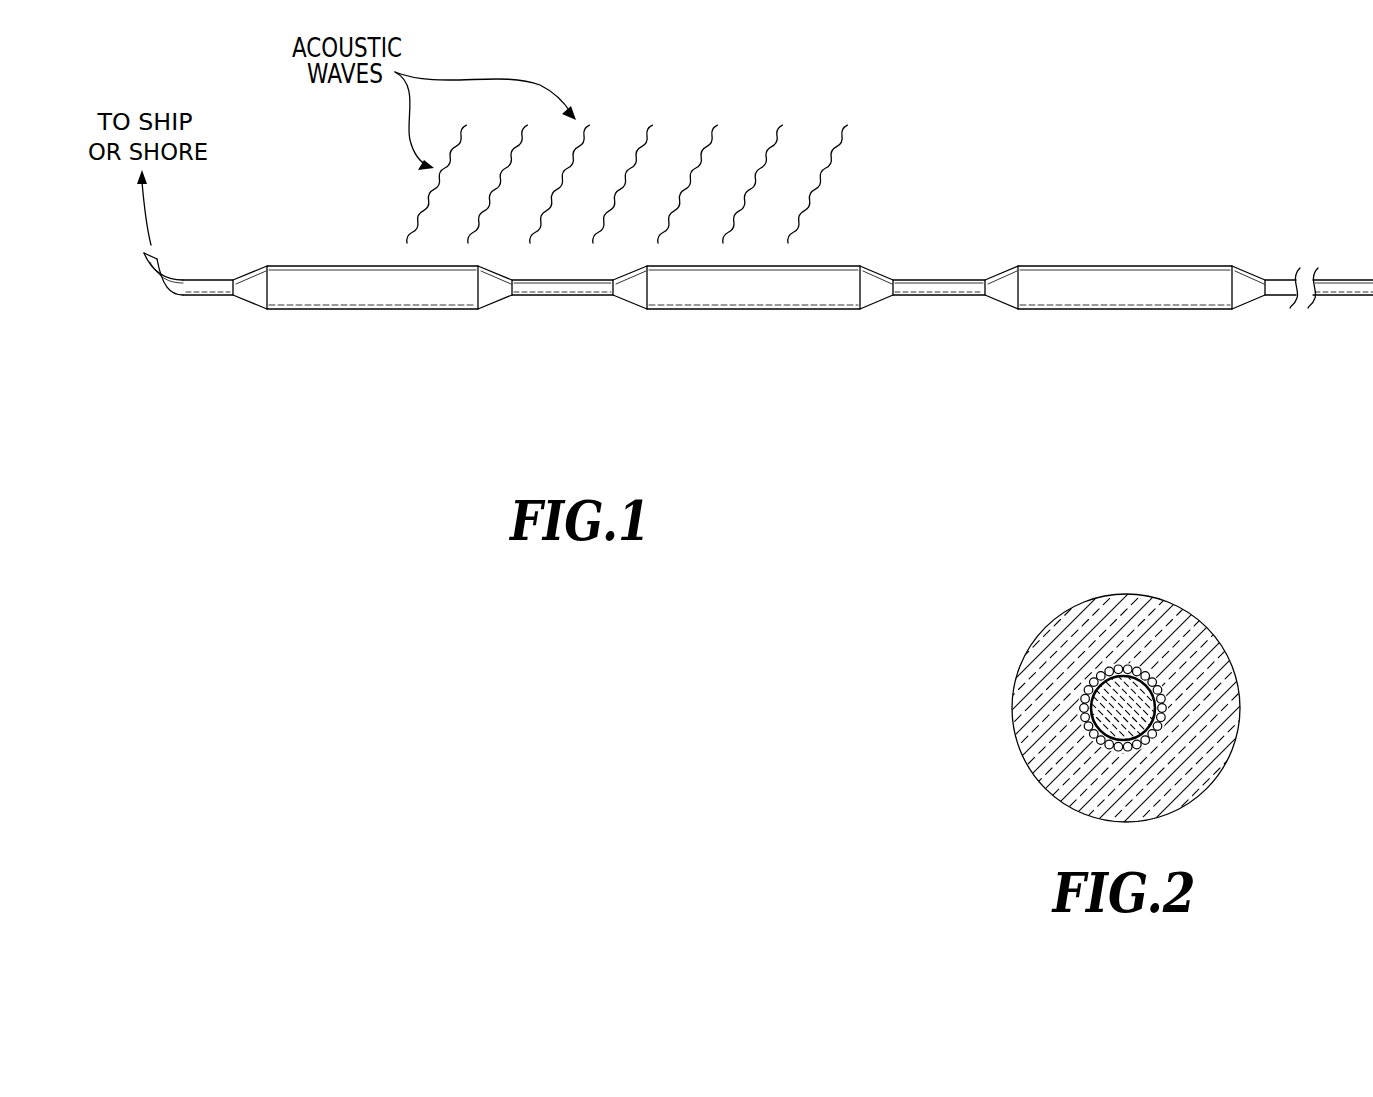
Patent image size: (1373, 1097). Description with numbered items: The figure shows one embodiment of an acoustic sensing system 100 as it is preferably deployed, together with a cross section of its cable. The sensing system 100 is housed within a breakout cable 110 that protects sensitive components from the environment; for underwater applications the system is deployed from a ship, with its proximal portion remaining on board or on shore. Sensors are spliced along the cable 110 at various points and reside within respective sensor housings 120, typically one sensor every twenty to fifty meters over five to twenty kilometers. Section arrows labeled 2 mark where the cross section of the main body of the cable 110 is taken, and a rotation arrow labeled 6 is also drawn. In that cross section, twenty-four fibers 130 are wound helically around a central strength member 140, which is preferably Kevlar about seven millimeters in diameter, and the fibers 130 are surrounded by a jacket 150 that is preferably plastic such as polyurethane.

In FIG. 1, the acoustic sensing system 100 is at (240, 342).
In FIG. 1, the breakout cable 110 is at (533, 297).
In FIG. 2, the breakout cable 110 is at (1033, 636).
In FIG. 1, the sensor housing 120 is at (728, 308).
In FIG. 2, the fibers 130 is at (1152, 673).
In FIG. 2, the central strength member 140 is at (1092, 732).
In FIG. 2, the jacket 150 is at (1153, 598).
In FIG. 1, the section line for FIG. 2 is at (920, 248).
In FIG. 1, the rotation direction arrow referencing FIG. 6 is at (1128, 353).